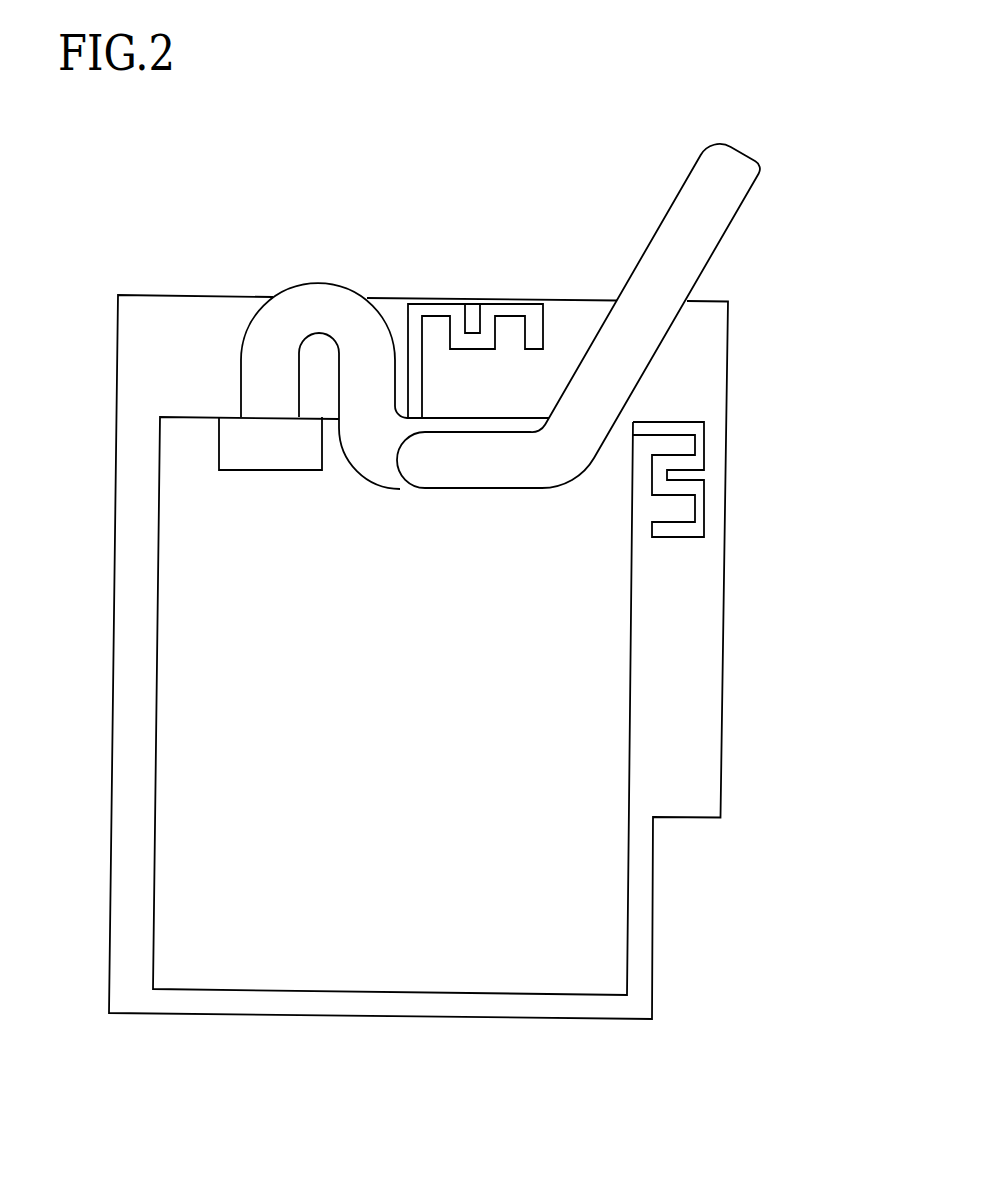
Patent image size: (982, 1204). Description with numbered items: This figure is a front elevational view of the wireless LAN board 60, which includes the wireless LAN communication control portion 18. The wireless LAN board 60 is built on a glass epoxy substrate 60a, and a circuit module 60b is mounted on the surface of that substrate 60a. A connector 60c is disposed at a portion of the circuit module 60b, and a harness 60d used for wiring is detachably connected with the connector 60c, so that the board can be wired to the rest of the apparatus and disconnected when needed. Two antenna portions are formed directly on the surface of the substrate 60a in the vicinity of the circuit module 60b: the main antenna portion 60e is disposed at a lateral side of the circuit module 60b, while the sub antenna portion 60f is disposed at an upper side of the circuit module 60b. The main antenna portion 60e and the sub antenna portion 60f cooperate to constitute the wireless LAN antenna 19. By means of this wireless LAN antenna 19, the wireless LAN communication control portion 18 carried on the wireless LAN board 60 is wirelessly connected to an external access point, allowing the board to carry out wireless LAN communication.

The wireless LAN board 60 is at (220, 278).
The wireless LAN communication control portion 18 is at (442, 581).
The glass epoxy substrate 60a is at (145, 372).
The circuit module 60b is at (178, 728).
The connector 60c is at (280, 447).
The harness 60d is at (663, 257).
The main antenna portion 60e is at (703, 510).
The sub antenna portion 60f is at (445, 308).
The wireless LAN antenna 19 is at (626, 389).